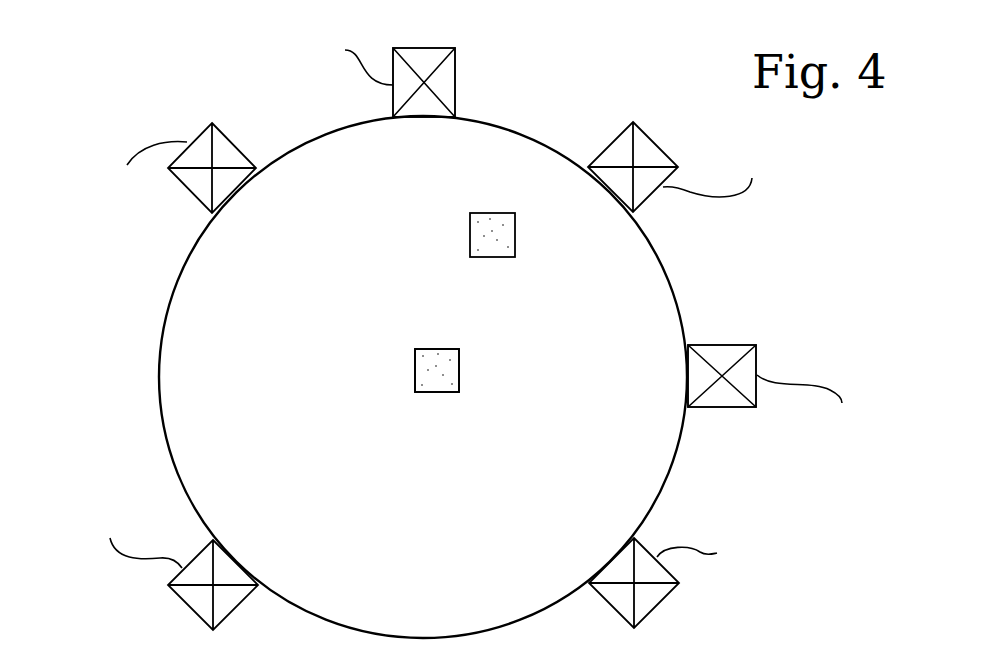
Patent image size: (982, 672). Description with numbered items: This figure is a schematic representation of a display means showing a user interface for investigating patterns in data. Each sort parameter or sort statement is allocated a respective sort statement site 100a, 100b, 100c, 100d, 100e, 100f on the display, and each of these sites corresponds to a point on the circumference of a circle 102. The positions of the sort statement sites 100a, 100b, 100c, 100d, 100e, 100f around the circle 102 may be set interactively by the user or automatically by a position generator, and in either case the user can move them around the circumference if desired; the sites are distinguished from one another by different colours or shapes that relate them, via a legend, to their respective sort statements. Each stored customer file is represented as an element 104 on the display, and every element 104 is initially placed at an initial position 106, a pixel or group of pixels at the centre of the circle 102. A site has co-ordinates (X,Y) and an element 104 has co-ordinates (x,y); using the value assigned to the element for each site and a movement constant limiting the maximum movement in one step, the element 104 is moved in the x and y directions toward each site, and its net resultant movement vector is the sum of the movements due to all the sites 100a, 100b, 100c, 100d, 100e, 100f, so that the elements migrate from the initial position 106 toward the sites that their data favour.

The sort statement site 100a is at (455, 80).
The sort statement site 100b is at (660, 138).
The sort statement site 100c is at (707, 345).
The sort statement site 100d is at (667, 600).
The sort statement site 100e is at (183, 603).
The sort statement site 100f is at (192, 187).
The circle 102 is at (670, 277).
The element 104 is at (513, 213).
The initial position 106 is at (459, 385).